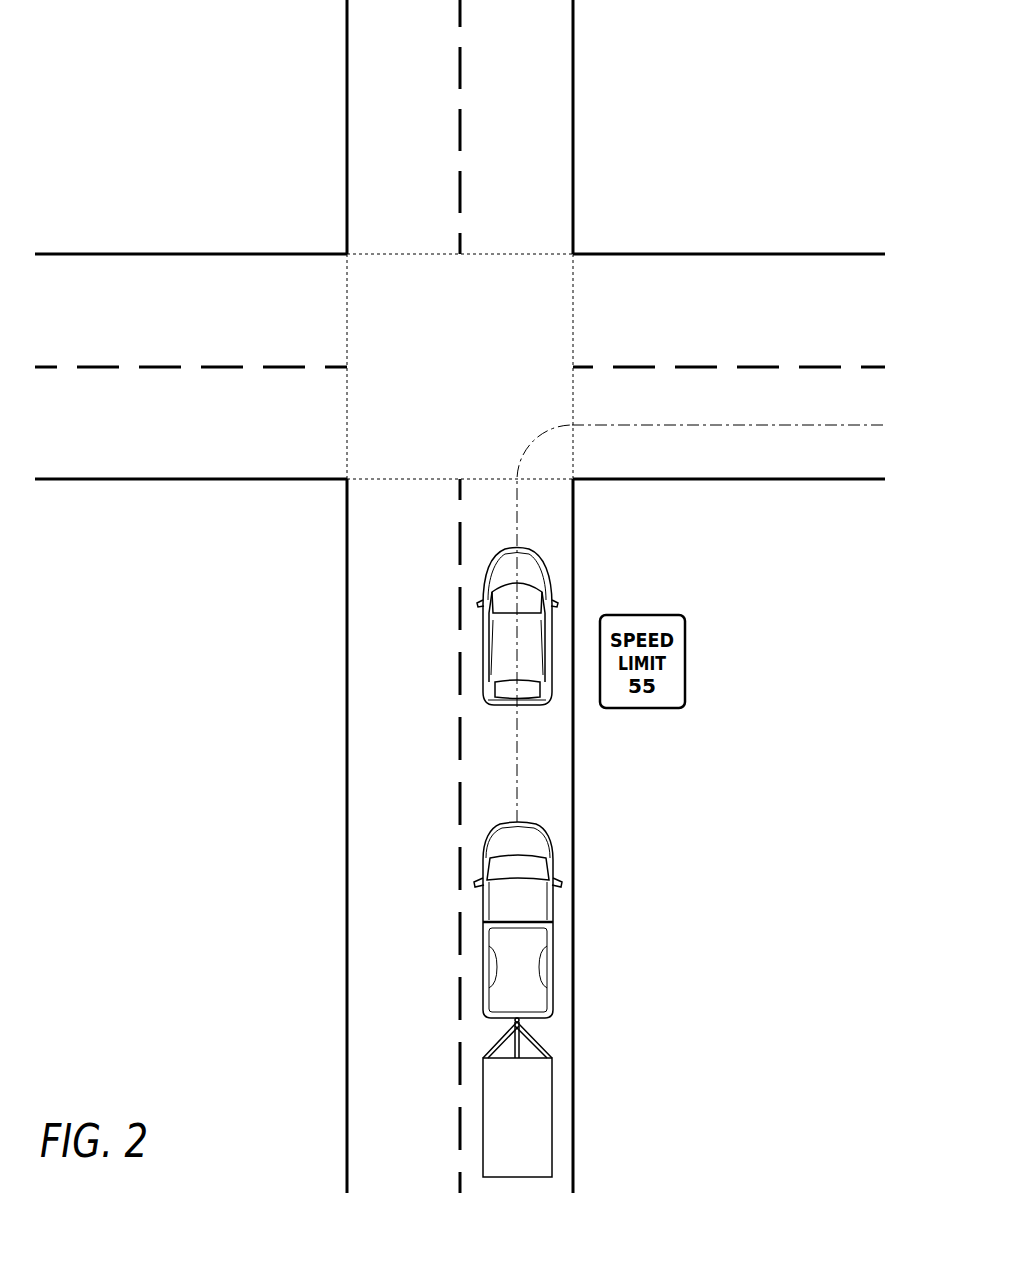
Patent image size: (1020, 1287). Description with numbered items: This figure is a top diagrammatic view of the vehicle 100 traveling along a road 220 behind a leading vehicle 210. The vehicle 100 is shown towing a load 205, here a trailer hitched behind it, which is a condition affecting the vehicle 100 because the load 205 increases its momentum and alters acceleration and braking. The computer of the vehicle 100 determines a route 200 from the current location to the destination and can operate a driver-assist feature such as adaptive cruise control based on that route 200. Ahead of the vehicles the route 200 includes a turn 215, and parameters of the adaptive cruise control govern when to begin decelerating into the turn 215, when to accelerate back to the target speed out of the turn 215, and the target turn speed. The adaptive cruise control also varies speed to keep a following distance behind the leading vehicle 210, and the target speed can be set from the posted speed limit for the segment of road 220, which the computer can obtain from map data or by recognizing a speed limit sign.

The vehicle 100 is at (552, 920).
The route 200 is at (793, 425).
The load 205 is at (552, 1100).
The leading vehicle 210 is at (550, 593).
The turn 215 is at (542, 432).
The road 220 is at (385, 778).